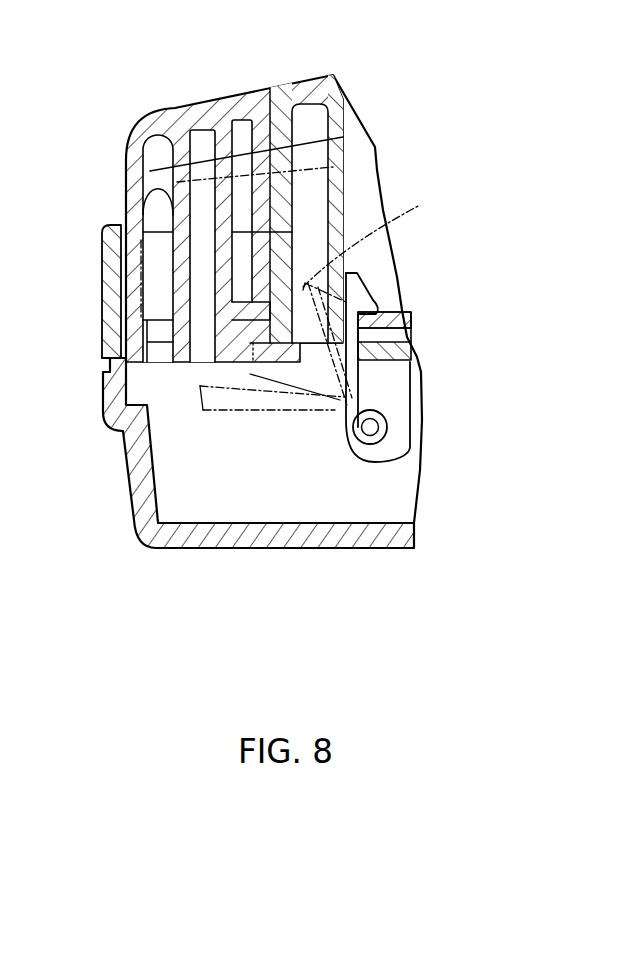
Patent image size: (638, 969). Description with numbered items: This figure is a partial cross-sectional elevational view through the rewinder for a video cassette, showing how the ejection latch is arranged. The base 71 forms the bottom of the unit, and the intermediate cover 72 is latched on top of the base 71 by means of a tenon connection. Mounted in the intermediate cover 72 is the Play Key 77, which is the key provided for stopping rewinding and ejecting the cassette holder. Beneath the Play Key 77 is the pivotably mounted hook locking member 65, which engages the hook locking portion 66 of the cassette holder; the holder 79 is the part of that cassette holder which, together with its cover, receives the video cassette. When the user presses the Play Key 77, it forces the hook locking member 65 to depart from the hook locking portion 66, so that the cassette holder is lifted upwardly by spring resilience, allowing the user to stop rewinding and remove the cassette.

The hook locking member 65 is at (420, 205).
The hook locking portion 66 is at (390, 293).
The base 71 is at (122, 489).
The intermediate cover 72 is at (303, 80).
The Play Key 77 is at (199, 106).
The holder 79 is at (403, 322).